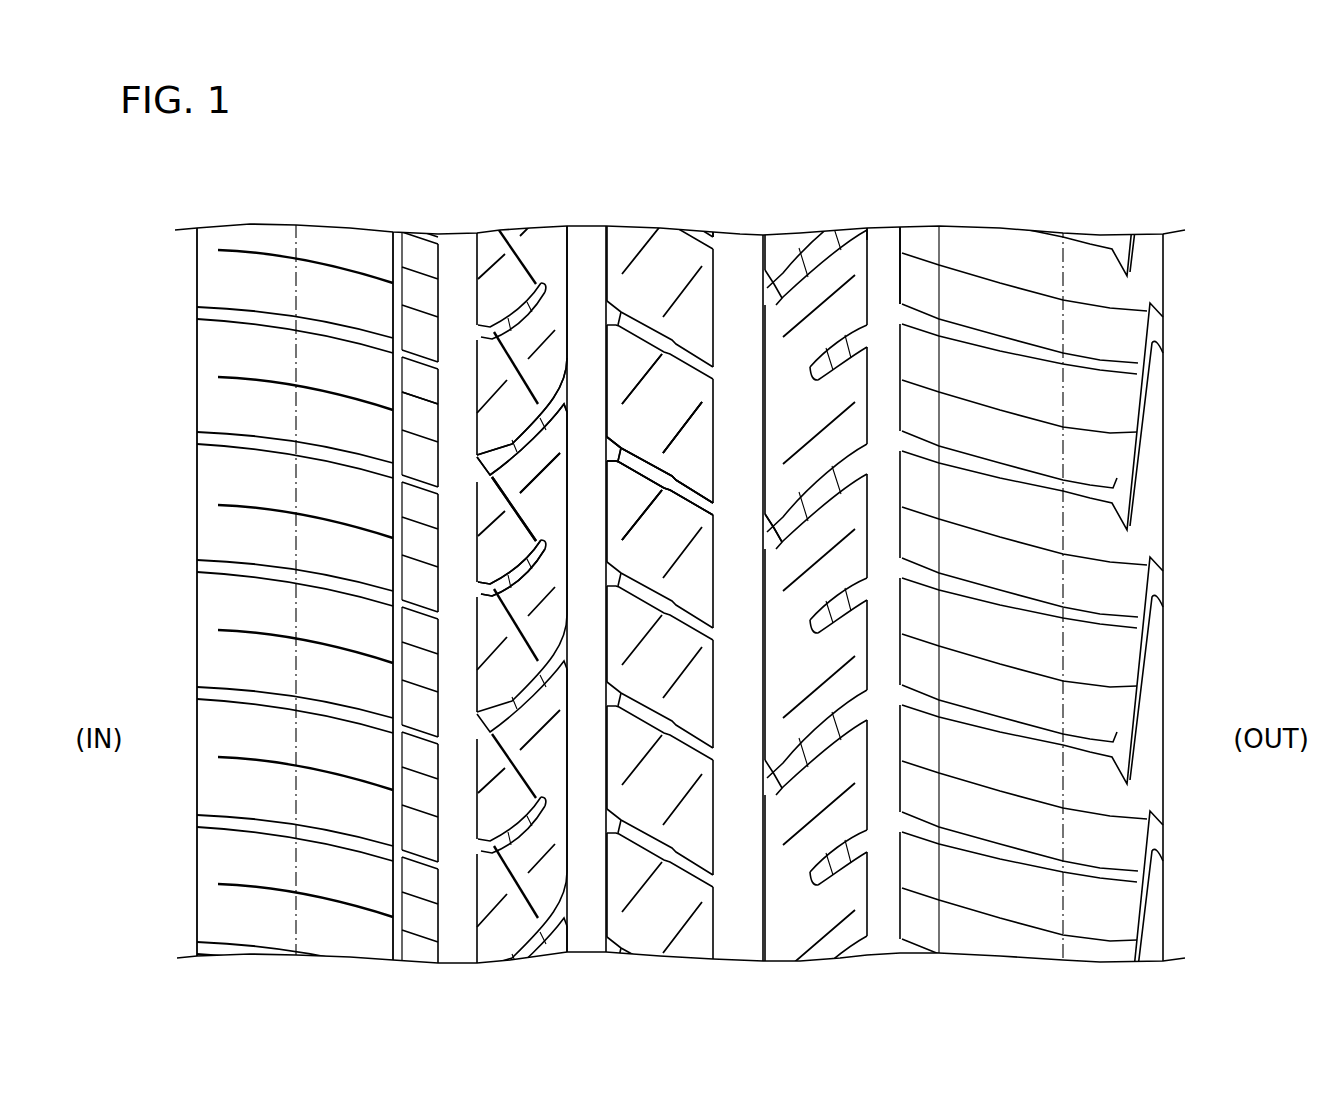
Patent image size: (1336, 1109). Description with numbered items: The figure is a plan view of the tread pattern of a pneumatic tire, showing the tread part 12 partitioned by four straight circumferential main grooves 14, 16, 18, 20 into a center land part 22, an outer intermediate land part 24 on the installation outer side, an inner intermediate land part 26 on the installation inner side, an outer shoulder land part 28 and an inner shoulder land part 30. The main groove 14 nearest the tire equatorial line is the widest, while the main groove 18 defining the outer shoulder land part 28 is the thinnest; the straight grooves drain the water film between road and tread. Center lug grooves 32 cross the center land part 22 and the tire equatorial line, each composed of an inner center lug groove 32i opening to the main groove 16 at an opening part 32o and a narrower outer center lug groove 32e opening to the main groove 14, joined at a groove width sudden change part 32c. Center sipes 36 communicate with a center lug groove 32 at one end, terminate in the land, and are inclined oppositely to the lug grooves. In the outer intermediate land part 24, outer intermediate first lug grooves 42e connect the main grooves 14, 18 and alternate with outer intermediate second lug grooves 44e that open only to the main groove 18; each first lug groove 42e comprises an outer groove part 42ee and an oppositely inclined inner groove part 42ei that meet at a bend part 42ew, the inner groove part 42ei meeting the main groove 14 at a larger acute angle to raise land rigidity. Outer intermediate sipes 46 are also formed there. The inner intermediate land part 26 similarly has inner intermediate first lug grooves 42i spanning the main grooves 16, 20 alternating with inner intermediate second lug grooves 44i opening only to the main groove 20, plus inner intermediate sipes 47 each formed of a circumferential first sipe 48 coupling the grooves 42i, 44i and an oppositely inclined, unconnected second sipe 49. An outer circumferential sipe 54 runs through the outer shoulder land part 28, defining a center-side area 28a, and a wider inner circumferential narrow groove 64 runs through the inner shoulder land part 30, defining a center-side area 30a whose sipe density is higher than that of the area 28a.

The tread part 12 is at (1228, 183).
The main groove 14 is at (737, 245).
The main groove 16 is at (595, 248).
The main groove 18 is at (880, 245).
The main groove 20 is at (455, 245).
The center land part 22 is at (675, 197).
The outer intermediate land part 24 is at (815, 197).
The inner intermediate land part 26 is at (515, 197).
The outer shoulder land part 28 is at (1005, 197).
The area on the tire center side 28a is at (900, 216).
The inner shoulder land part 30 is at (332, 195).
The area on the tire center side 30a is at (438, 216).
The center lug groove 32 is at (650, 426).
The opening part 32o is at (617, 450).
The inner center lug groove 32i is at (632, 468).
The groove width sudden change part 32c is at (665, 524).
The outer center lug groove 32e is at (690, 486).
The center sipe 36 is at (655, 462).
The inner intermediate first lug groove 42i is at (515, 408).
The outer intermediate first lug groove 42e is at (805, 440).
The outer groove part 42ee is at (820, 447).
The inner groove part 42ei is at (787, 561).
The bend part 42ew is at (815, 597).
The inner intermediate second lug groove 44i is at (518, 543).
The outer intermediate second lug groove 44e is at (838, 580).
The outer intermediate sipe 46 is at (812, 688).
The inner intermediate sipe 47 is at (665, 495).
The first sipe 48 is at (532, 540).
The second sipe 49 is at (522, 498).
The outer circumferential sipe 54 is at (950, 372).
The inner circumferential narrow groove 64 is at (400, 376).